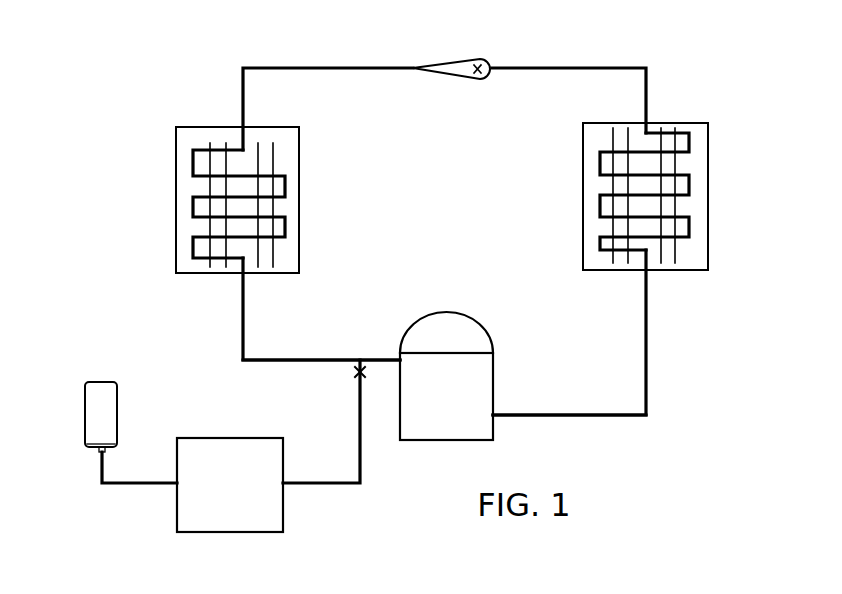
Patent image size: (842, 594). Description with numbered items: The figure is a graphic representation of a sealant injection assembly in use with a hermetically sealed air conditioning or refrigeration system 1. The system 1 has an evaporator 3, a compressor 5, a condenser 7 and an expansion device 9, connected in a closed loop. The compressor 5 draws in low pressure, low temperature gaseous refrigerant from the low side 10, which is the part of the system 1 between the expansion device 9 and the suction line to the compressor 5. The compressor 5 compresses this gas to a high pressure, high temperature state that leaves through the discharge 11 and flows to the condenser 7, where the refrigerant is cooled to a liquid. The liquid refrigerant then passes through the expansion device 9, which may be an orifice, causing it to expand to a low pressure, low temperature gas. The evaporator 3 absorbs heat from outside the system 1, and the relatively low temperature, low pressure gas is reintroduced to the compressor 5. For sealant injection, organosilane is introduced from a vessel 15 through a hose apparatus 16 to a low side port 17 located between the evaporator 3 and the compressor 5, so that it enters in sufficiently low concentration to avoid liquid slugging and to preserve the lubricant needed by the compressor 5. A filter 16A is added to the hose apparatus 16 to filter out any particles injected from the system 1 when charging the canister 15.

The air conditioning or refrigeration system 1 is at (710, 40).
The evaporator 3 is at (242, 201).
The compressor 5 is at (457, 313).
The condenser 7 is at (647, 183).
The expansion device 9 is at (449, 77).
The low side 10 is at (316, 342).
The discharge 11 is at (538, 413).
The vessel 15 is at (97, 403).
The hose apparatus 16 is at (123, 487).
The filter 16A is at (218, 533).
The low side port 17 is at (356, 374).